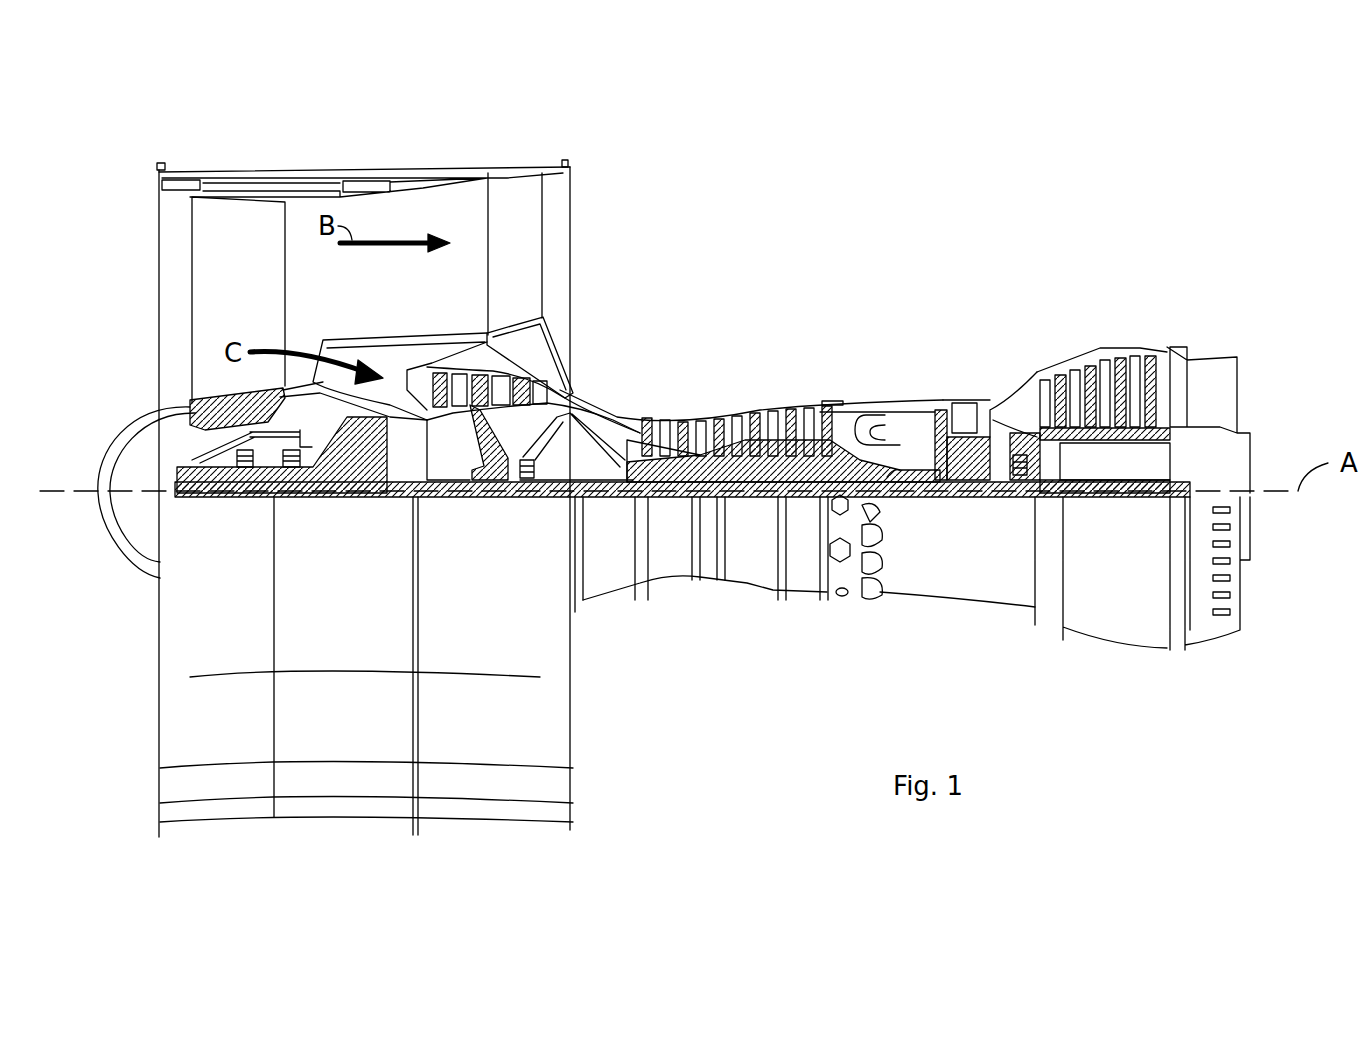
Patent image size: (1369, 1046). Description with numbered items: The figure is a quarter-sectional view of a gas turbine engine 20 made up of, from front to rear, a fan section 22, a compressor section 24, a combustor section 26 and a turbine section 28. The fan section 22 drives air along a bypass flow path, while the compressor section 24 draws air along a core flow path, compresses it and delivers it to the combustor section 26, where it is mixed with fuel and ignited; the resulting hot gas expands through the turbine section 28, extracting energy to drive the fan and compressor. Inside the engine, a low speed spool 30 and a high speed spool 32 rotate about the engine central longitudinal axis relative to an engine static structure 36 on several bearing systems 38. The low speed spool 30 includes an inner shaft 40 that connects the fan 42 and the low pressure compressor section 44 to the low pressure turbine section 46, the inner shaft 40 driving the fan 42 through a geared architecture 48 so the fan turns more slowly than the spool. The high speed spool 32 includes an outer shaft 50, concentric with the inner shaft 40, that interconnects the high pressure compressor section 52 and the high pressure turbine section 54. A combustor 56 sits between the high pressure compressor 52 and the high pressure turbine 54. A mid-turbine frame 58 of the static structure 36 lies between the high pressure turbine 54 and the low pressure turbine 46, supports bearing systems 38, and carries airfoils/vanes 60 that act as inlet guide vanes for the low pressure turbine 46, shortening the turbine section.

The gas turbine engine 20 is at (1075, 168).
The fan section 22 is at (145, 137).
The compressor section 24 is at (865, 282).
The combustor section 26 is at (938, 282).
The turbine section 28 is at (940, 282).
The low speed spool 30 is at (748, 500).
The high speed spool 32 is at (782, 458).
The engine static structure 36 is at (803, 600).
The bearing systems 38 is at (245, 470).
The inner shaft 40 is at (590, 497).
The fan 42 is at (253, 279).
The low pressure compressor section 44 is at (497, 385).
The low pressure turbine section 46 is at (1107, 368).
The geared architecture 48 is at (370, 470).
The outer shaft 50 is at (890, 475).
The high pressure compressor section 52 is at (716, 420).
The high pressure turbine section 54 is at (966, 395).
The combustor 56 is at (878, 428).
The mid-turbine frame 58 is at (1010, 415).
The airfoils/vanes 60 is at (1012, 490).